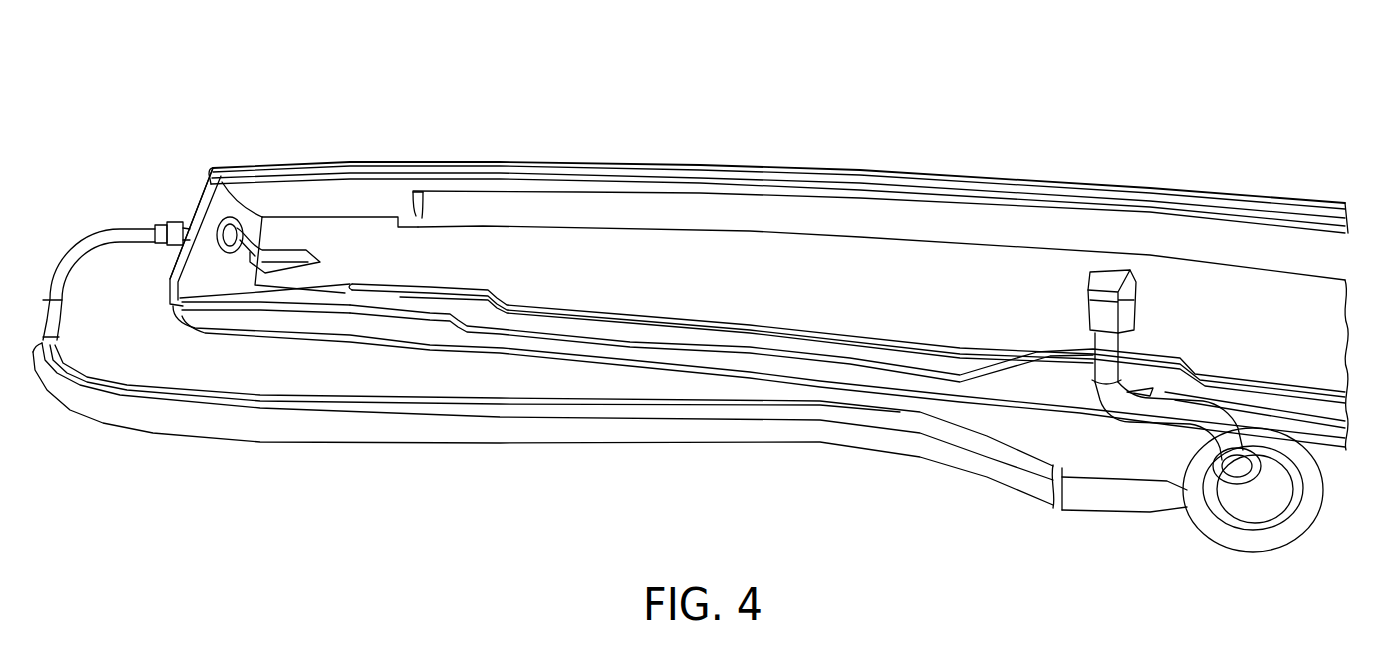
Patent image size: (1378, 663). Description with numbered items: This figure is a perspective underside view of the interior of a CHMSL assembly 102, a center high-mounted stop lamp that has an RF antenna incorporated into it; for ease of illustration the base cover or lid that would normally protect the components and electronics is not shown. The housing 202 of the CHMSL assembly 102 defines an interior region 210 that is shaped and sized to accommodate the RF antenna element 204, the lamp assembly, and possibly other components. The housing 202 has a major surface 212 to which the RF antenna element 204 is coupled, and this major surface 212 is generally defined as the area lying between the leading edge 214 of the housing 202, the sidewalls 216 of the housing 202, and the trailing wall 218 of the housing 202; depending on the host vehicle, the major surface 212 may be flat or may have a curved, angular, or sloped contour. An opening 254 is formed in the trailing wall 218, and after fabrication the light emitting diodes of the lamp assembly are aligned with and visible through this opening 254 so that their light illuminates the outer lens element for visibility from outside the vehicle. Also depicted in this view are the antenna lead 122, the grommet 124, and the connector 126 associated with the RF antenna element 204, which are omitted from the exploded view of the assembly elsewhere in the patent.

The CHMSL assembly 102 is at (626, 112).
The antenna lead 122 is at (75, 240).
The grommet 124 is at (1248, 553).
The connector 126 is at (1135, 303).
The housing 202 is at (213, 178).
The RF antenna element 204 is at (924, 304).
The interior region 210 is at (278, 216).
The major surface 212 is at (243, 284).
The leading edge 214 is at (388, 343).
The sidewalls 216 is at (197, 208).
The trailing wall 218 is at (378, 168).
The opening 254 is at (803, 208).